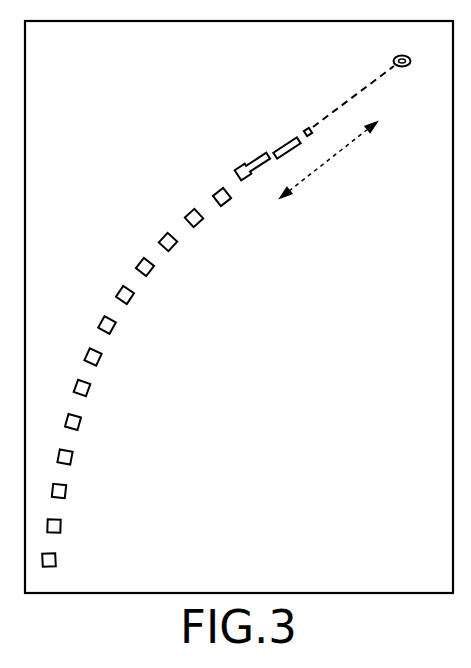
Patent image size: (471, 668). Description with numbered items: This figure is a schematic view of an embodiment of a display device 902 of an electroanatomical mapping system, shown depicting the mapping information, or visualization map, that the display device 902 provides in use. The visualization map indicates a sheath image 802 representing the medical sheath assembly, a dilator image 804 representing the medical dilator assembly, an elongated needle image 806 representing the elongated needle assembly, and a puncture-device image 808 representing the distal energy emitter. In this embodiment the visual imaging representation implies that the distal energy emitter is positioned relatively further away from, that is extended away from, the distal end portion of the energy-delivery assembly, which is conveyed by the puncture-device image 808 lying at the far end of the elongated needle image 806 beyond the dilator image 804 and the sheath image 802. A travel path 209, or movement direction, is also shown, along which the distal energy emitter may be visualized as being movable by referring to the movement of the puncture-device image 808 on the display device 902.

The sheath image 802 is at (163, 232).
The dilator image 804 is at (285, 147).
The elongated needle image 806 is at (337, 108).
The puncture-device image 808 is at (401, 68).
The travel path 209 is at (326, 159).
The display device 902 is at (393, 531).